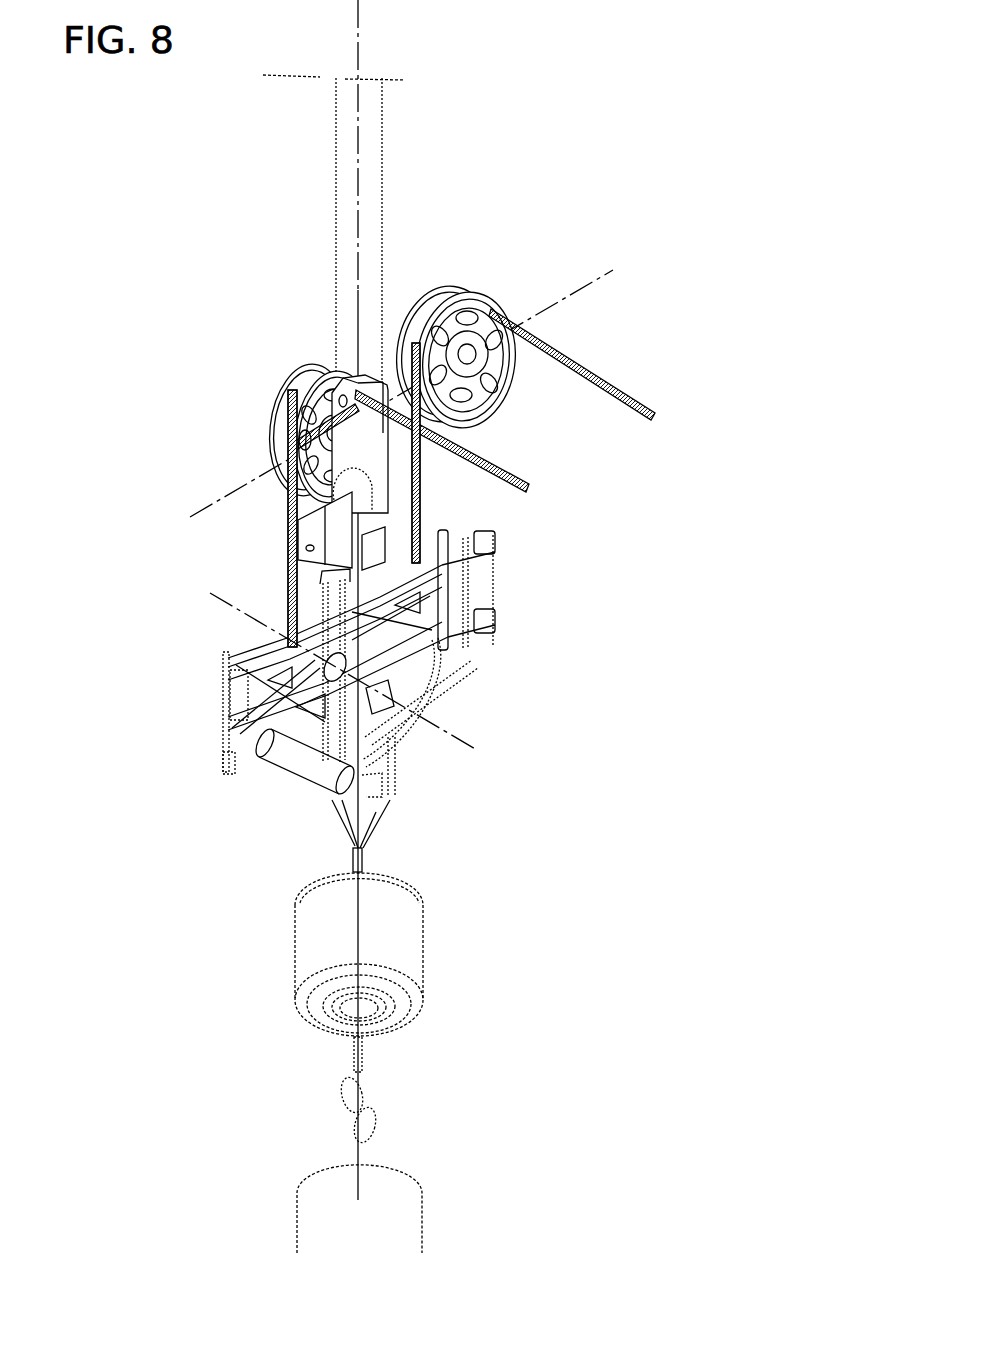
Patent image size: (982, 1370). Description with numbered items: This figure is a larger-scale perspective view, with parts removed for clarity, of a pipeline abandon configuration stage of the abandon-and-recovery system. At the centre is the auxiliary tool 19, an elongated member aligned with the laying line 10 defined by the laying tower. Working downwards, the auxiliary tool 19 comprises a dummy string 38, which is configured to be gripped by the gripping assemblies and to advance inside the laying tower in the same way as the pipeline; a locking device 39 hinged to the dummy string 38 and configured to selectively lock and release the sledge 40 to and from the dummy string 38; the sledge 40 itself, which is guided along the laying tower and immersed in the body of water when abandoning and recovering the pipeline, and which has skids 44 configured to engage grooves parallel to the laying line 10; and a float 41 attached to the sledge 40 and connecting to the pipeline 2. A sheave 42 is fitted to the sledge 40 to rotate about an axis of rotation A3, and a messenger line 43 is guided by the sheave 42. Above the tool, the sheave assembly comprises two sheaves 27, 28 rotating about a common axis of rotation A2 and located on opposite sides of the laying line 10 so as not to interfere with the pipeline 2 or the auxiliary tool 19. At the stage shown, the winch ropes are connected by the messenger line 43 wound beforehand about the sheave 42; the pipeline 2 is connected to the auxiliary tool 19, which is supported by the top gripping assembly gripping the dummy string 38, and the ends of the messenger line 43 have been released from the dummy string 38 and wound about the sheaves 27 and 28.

The laying line 10 is at (362, 4).
The dummy string 38 is at (340, 226).
The common axis of rotation A2 is at (595, 270).
The sheave 28 is at (292, 408).
The locking device 39 is at (300, 492).
The sheave 27 is at (508, 368).
The auxiliary tool 19 is at (640, 357).
The messenger line 43 is at (420, 460).
The sledge 40 is at (452, 542).
The skids 44 is at (495, 607).
The axis of rotation A3 is at (210, 593).
The sheave 42 is at (420, 710).
The float 41 is at (402, 946).
The pipeline 2 is at (313, 1208).